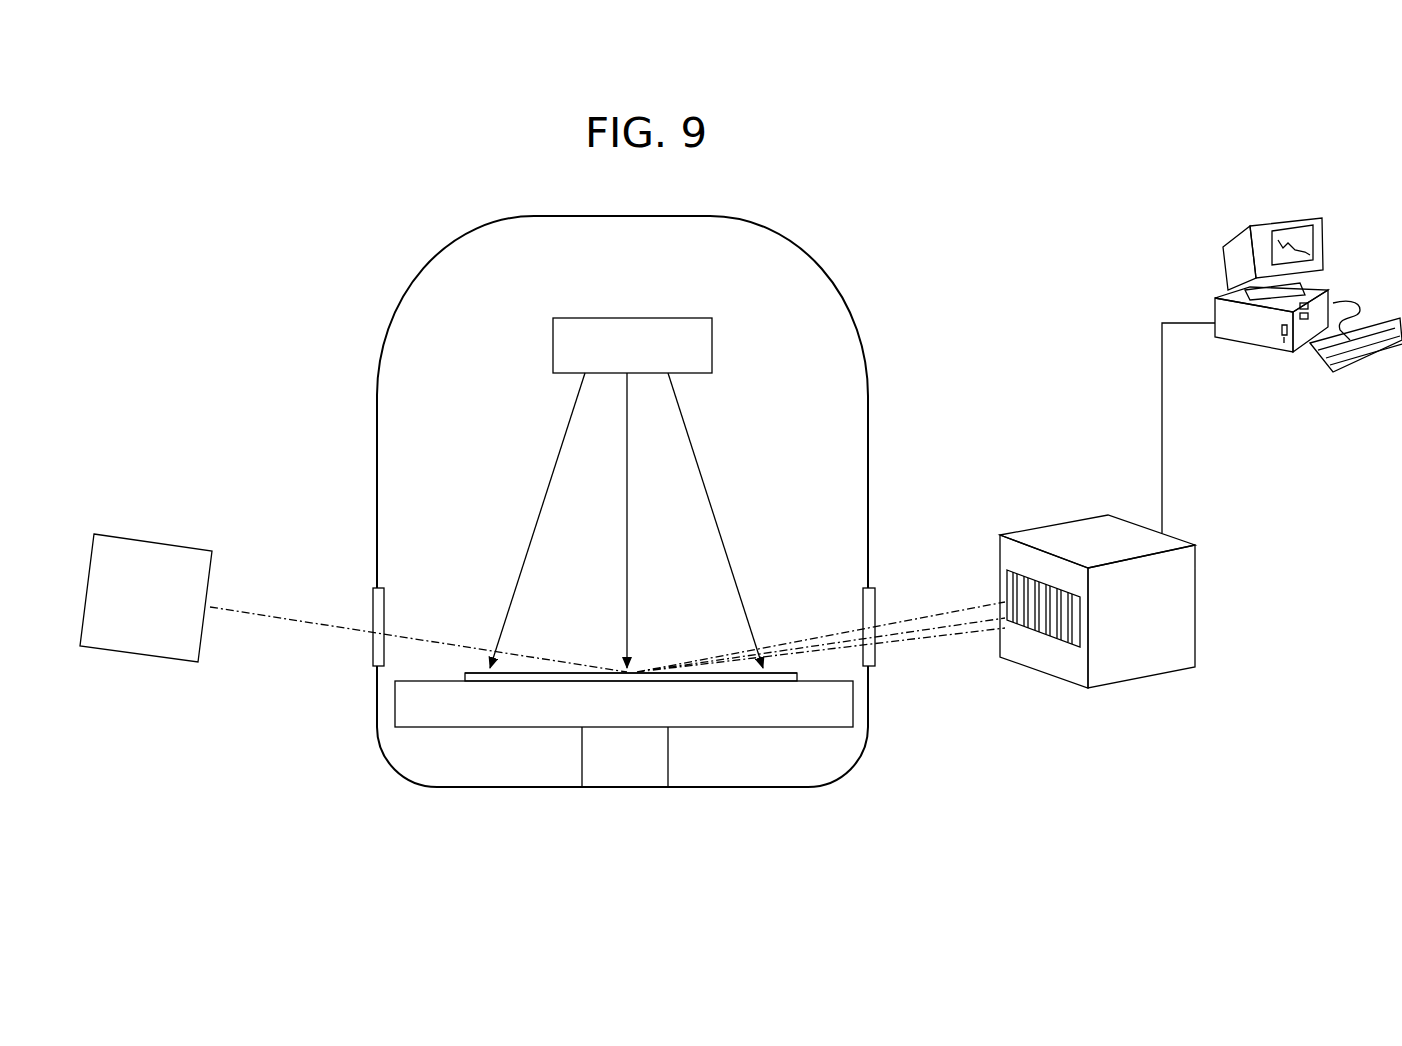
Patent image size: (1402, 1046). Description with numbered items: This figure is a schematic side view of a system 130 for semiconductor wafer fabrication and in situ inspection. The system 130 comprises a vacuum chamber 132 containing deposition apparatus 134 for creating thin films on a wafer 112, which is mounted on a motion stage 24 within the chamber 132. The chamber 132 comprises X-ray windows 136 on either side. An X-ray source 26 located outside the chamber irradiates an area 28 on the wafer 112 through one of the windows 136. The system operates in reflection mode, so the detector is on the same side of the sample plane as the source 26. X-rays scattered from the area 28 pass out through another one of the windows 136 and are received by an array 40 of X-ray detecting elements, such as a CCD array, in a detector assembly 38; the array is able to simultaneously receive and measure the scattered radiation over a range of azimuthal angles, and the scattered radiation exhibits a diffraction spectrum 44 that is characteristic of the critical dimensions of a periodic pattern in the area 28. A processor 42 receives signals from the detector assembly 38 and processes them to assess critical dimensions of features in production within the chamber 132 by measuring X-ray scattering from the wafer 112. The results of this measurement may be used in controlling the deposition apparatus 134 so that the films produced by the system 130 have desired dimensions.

The system 130 is at (230, 247).
The vacuum chamber 132 is at (430, 261).
The deposition apparatus 134 is at (712, 345).
The X-ray windows 136 is at (386, 596).
The X-ray source 26 is at (163, 544).
The area 28 is at (622, 676).
The motion stage 24 is at (856, 704).
The wafer 112 is at (776, 671).
The detector assembly 38 is at (1118, 678).
The array 40 is at (1052, 640).
The processor 42 is at (1210, 296).
The diffraction spectrum 44 is at (1285, 240).